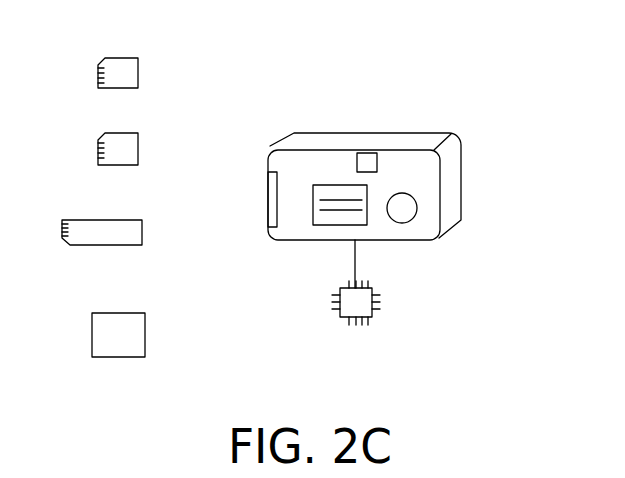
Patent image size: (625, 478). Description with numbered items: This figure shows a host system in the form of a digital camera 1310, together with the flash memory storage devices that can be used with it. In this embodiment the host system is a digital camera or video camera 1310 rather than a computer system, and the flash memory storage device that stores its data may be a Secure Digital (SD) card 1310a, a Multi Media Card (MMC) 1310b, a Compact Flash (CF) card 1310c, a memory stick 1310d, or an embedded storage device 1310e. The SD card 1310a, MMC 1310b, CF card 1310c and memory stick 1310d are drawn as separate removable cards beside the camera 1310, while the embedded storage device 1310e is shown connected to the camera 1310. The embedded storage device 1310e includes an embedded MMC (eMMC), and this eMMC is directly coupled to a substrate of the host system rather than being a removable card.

The digital camera 1310 is at (462, 172).
The Secure Digital (SD) card 1310a is at (138, 62).
The Multi Media Card (MMC) 1310b is at (138, 136).
The Compact Flash (CF) card 1310c is at (145, 328).
The memory stick 1310d is at (142, 232).
The embedded storage device 1310e is at (373, 307).